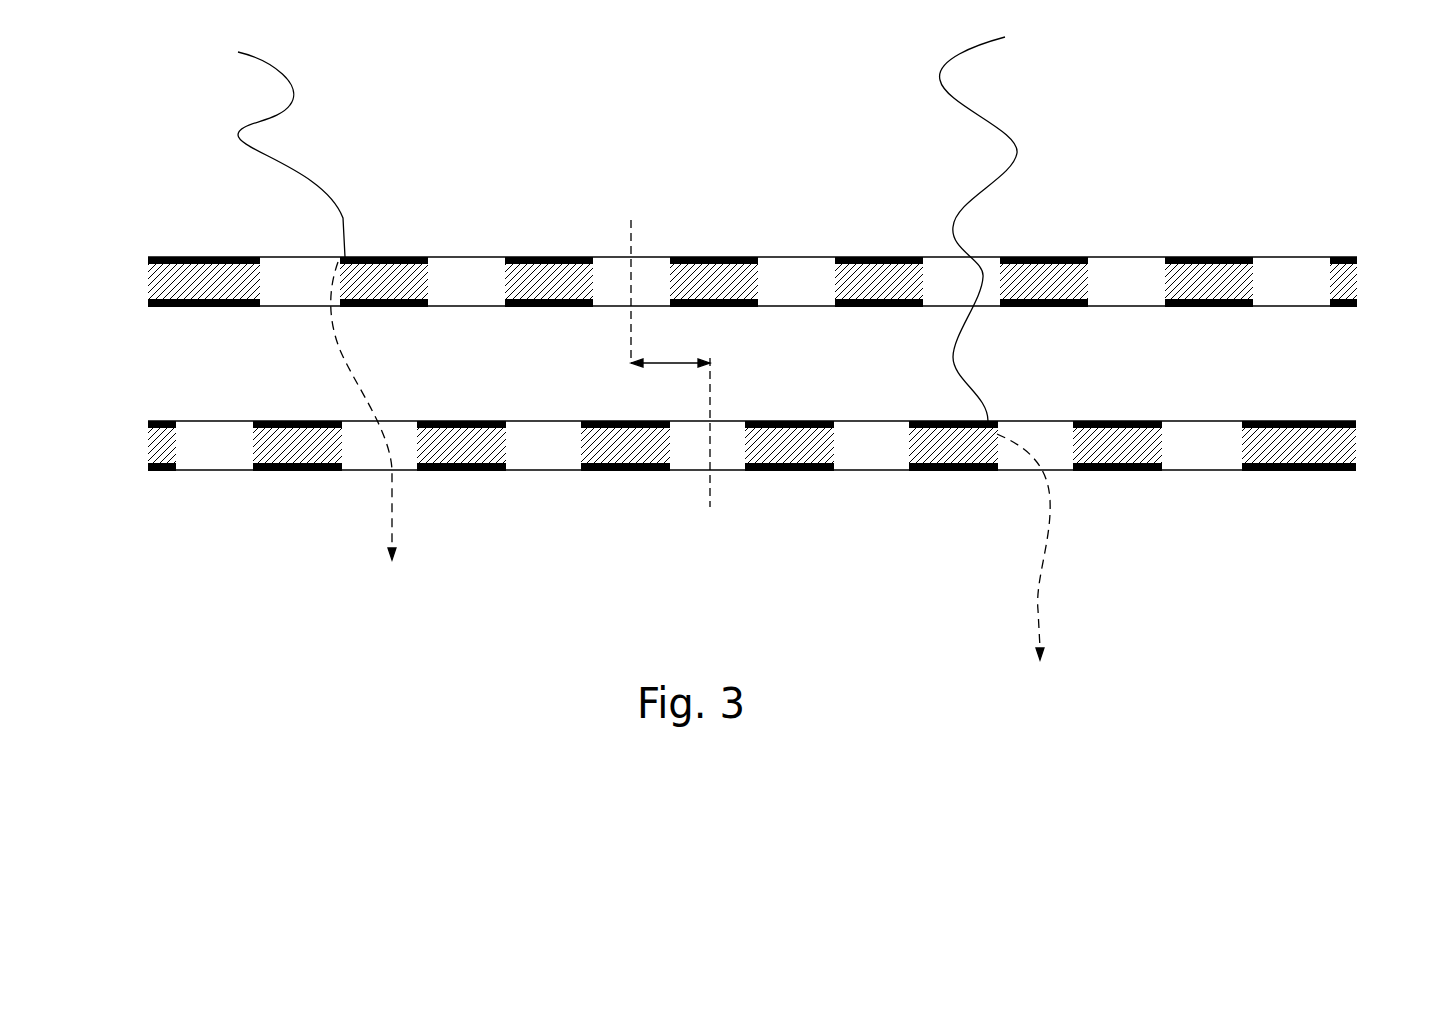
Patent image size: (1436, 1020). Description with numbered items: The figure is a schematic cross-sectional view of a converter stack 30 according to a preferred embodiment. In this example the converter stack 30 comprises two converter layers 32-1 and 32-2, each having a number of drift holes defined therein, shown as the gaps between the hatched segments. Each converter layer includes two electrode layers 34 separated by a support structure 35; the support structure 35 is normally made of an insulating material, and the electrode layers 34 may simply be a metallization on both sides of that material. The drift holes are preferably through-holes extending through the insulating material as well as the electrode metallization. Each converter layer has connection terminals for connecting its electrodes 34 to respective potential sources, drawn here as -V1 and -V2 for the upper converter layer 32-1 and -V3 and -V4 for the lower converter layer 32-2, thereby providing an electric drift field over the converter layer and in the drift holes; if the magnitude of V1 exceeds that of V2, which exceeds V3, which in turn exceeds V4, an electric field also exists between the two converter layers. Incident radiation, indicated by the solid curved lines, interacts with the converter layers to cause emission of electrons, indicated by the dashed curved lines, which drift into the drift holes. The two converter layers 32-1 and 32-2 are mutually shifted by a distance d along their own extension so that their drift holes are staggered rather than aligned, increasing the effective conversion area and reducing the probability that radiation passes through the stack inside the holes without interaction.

The converter stack 30 is at (780, 348).
The converter layer 32-1 is at (752, 286).
The converter layer 32-2 is at (194, 496).
The electrode layers 34 is at (216, 257).
The support structure 35 is at (260, 285).
The potential source V1 is at (1357, 257).
The potential source V2 is at (1357, 306).
The potential source V3 is at (1356, 421).
The potential source V4 is at (1356, 470).